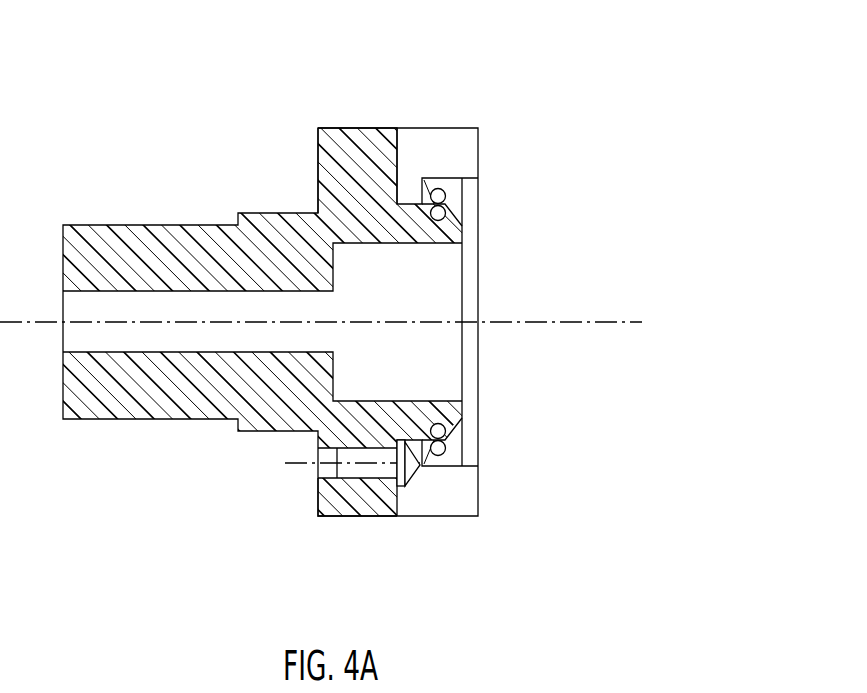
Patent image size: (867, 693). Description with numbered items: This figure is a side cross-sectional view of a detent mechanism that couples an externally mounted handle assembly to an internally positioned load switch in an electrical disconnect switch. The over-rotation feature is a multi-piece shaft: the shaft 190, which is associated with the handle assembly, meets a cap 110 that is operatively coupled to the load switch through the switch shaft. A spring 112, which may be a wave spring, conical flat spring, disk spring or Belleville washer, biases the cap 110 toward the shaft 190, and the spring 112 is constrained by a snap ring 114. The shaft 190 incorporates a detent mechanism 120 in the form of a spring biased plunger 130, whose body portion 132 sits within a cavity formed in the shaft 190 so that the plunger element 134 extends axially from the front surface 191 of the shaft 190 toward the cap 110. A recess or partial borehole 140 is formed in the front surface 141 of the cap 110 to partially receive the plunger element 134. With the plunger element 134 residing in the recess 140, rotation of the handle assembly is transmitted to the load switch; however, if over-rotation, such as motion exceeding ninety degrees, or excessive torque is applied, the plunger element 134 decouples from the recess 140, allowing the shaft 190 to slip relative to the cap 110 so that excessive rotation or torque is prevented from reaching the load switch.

The shaft 190 is at (433, 306).
The cap 110 is at (465, 128).
The front surface of the cap 141 is at (388, 172).
The front surface of the shaft 191 is at (398, 142).
The spring 112 is at (432, 184).
The snap ring 114 is at (452, 449).
The recess 140 is at (404, 524).
The detent mechanism 120 is at (387, 480).
The spring biased plunger 130 is at (357, 463).
The body portion 132 is at (353, 463).
The plunger element 134 is at (413, 478).